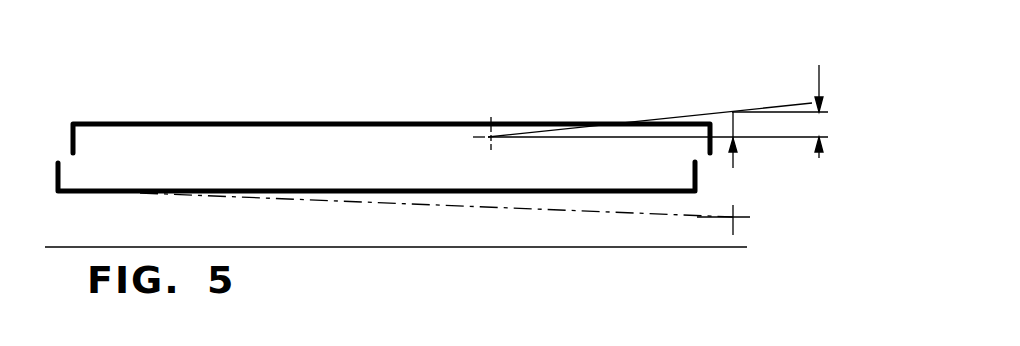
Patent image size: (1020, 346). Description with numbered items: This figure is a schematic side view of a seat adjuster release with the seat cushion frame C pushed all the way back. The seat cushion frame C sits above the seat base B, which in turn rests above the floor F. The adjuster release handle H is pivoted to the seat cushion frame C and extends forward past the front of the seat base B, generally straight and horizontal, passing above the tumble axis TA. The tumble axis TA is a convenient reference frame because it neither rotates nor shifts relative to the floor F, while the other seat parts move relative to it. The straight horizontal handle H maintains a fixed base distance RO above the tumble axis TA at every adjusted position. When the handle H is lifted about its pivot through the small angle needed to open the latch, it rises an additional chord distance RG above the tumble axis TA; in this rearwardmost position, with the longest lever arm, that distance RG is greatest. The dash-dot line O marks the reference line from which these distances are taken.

The seat cushion frame C is at (98, 122).
The seat base B is at (141, 193).
The adjuster release handle H is at (683, 116).
The reference axis line O is at (344, 203).
The floor F is at (211, 247).
The additional radial release distance RG is at (817, 126).
The base radial distance RO is at (723, 173).
The tumble axis TA is at (735, 217).